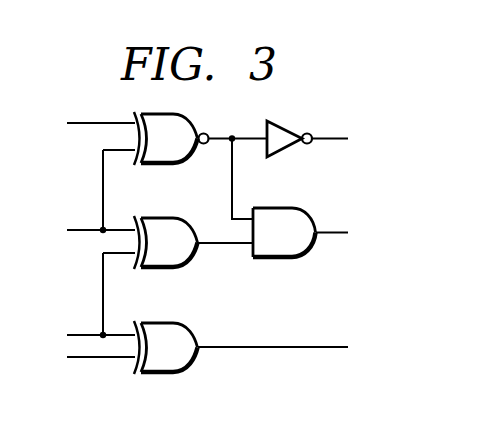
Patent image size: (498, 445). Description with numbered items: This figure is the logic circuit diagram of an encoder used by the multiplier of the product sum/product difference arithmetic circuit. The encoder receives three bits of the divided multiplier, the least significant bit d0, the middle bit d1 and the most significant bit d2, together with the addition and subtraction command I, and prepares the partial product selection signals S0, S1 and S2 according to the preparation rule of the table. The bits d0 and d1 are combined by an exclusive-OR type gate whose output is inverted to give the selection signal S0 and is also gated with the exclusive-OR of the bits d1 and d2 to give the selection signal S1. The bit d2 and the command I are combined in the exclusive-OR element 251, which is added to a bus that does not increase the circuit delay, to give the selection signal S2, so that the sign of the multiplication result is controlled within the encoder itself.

The exclusive-OR element 251 is at (200, 309).
The least significant bit d0 is at (88, 120).
The middle bit of the three bits d1 is at (88, 196).
The most significant bit d2 is at (88, 299).
The addition and subtraction command I is at (94, 358).
The partial product selection signal S0 is at (349, 135).
The partial product selection signal S1 is at (351, 229).
The partial product selection signal S2 is at (292, 346).